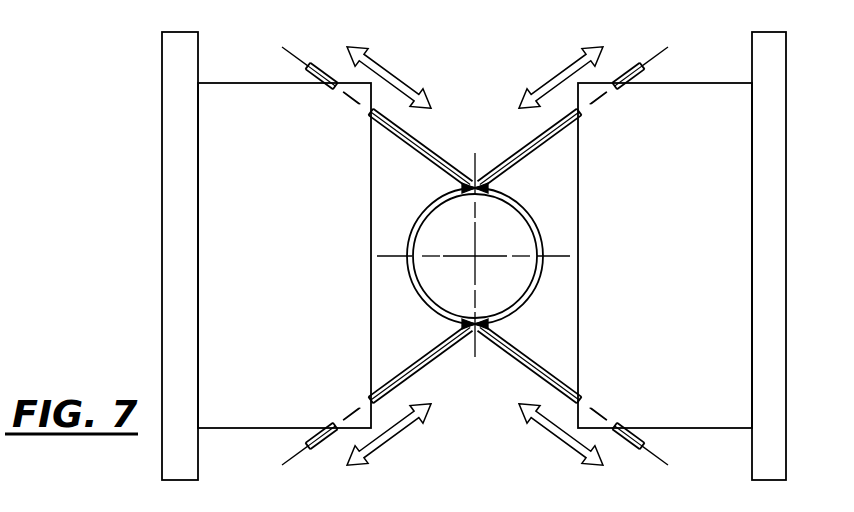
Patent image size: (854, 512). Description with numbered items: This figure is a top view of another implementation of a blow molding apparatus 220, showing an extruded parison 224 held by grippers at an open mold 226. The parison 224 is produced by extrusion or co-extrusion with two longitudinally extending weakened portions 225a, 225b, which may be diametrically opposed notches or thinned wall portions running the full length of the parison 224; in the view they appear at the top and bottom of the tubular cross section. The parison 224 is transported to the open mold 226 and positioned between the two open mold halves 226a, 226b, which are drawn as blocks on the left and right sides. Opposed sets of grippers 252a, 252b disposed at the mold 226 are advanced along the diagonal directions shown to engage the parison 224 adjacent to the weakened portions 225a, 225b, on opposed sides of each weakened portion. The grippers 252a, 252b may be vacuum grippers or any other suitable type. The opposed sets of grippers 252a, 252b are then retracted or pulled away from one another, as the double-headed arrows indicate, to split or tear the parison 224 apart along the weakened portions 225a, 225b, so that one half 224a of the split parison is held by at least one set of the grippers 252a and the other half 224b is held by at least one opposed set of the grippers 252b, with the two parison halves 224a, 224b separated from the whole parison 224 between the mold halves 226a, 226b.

The actuator assembly 220 is at (124, 38).
The parison 224 is at (550, 200).
The one half of the split parison 224a is at (409, 276).
The other half of the split parison 224b is at (538, 283).
The weakened portion 225a is at (456, 206).
The weakened portion 225b is at (486, 306).
The open mold 226 is at (628, 467).
The open mold half 226a is at (312, 213).
The open mold half 226b is at (727, 231).
The set of grippers 252a is at (413, 149).
The opposed set of grippers 252b is at (565, 128).